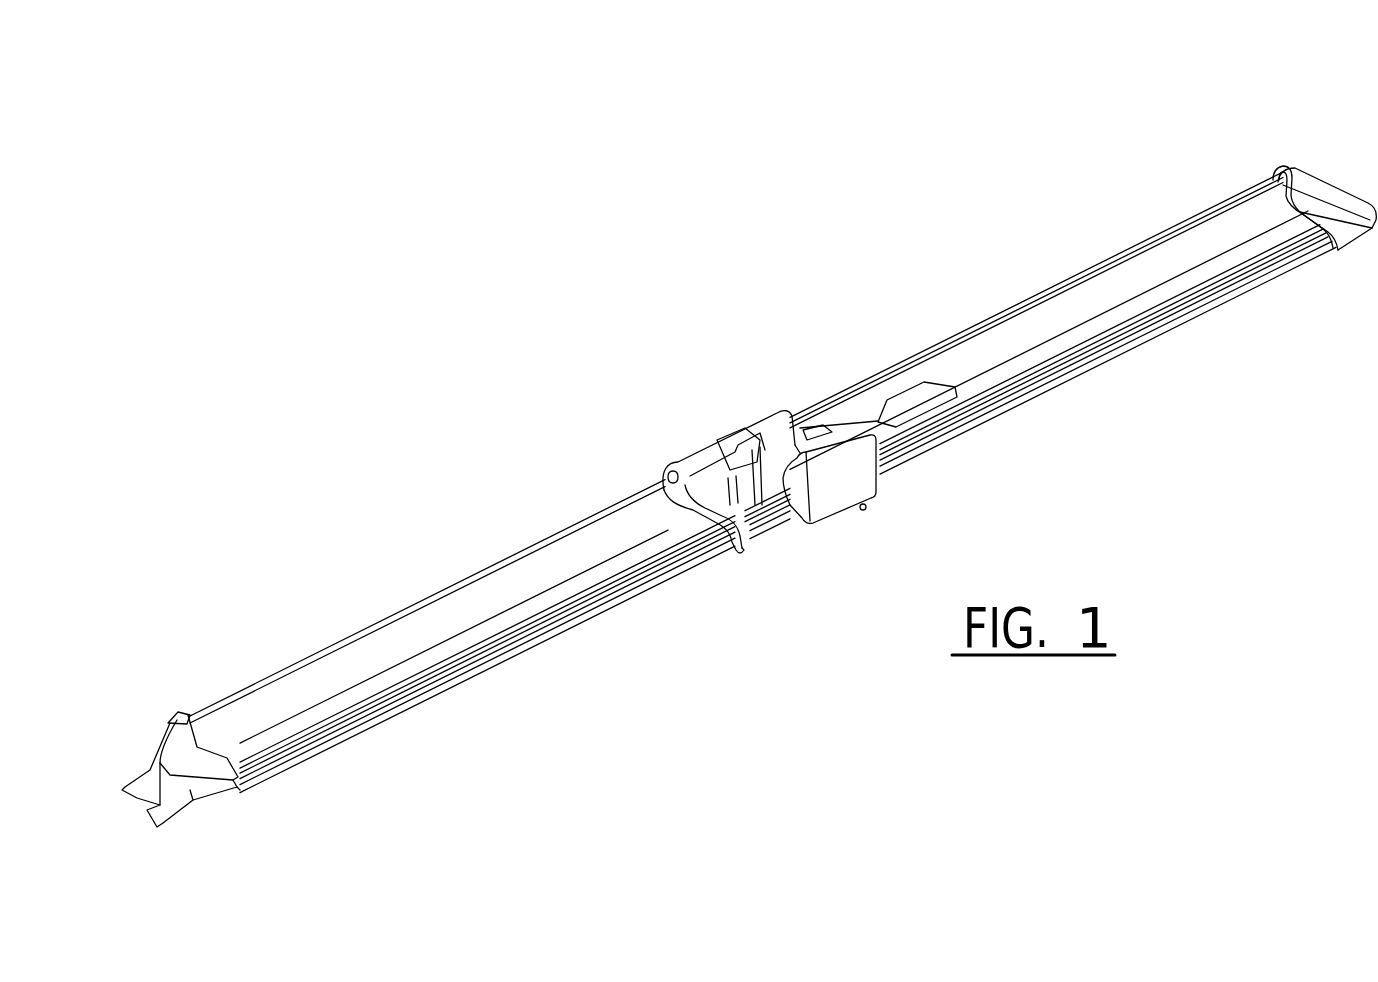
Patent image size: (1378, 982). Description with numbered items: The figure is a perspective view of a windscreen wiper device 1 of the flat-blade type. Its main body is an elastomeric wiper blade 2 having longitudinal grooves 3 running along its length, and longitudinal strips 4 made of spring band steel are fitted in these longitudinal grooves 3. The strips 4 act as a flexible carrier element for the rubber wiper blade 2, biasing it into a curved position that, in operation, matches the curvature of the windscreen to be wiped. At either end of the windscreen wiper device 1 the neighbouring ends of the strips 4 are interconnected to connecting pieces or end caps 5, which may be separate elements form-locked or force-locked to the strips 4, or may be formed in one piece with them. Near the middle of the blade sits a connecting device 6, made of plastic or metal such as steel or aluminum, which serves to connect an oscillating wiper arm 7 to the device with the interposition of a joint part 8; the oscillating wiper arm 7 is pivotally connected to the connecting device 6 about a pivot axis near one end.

The windscreen wiper device 1 is at (518, 162).
The elastomeric wiper blade 2 is at (563, 595).
The longitudinal grooves 3 is at (397, 712).
The longitudinal strips 4 is at (332, 742).
The connecting pieces 5 is at (163, 748).
The connecting device 6 is at (697, 458).
The oscillating wiper arm 7 is at (877, 420).
The joint part 8 is at (789, 524).